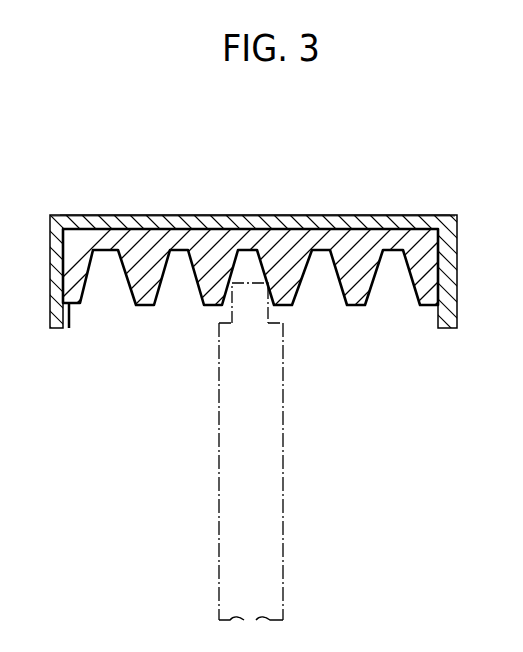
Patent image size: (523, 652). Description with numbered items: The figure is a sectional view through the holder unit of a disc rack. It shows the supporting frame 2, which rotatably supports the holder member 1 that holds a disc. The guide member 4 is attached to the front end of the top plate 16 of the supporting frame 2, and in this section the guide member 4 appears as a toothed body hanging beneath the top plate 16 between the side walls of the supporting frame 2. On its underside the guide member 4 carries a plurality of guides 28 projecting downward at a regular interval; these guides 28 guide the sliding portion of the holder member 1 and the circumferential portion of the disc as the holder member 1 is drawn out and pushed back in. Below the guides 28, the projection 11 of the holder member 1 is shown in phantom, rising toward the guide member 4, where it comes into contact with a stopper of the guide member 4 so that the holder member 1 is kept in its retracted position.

The holder member 1 is at (284, 448).
The supporting frame 2 is at (114, 214).
The guide member 4 is at (362, 215).
The projection 11 is at (270, 308).
The top plate 16 is at (232, 214).
The guides 28 is at (206, 290).